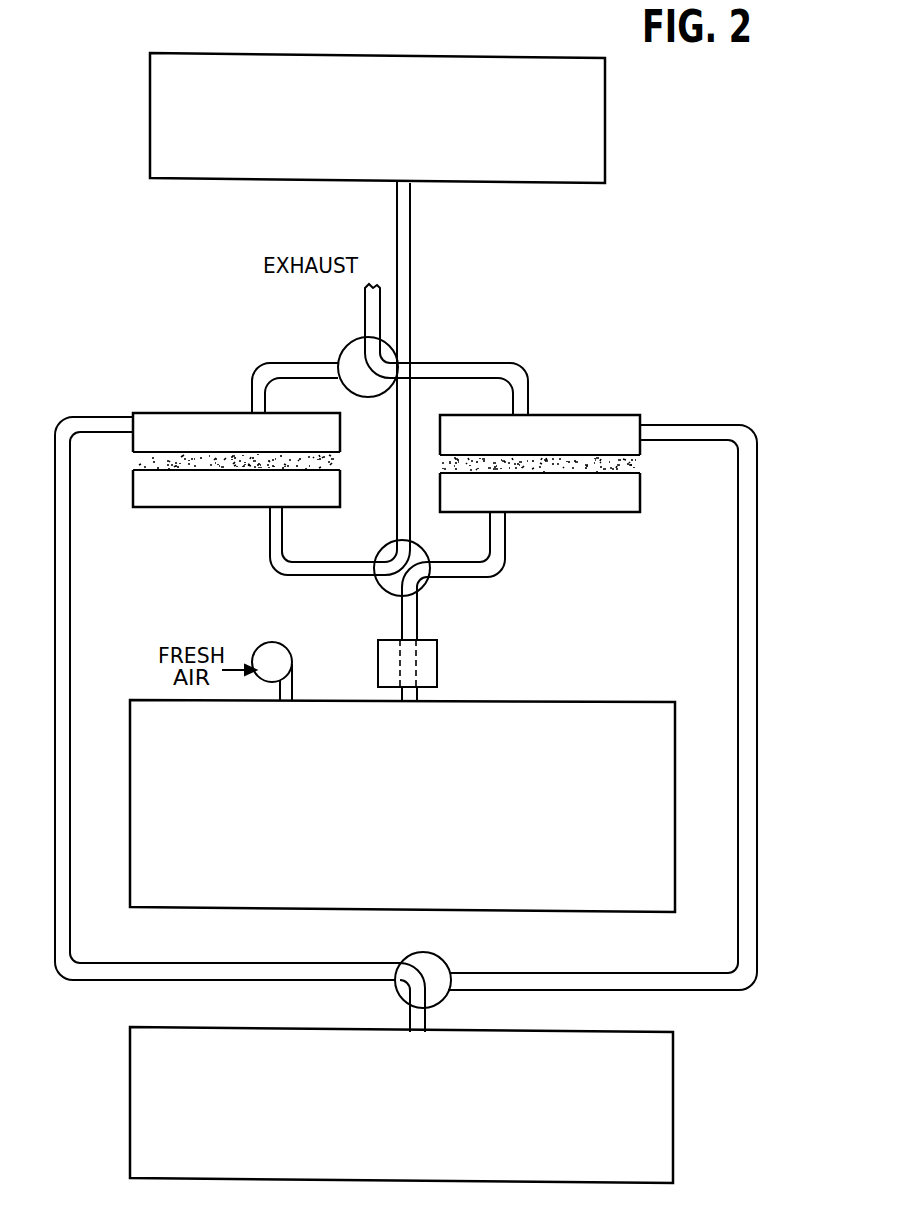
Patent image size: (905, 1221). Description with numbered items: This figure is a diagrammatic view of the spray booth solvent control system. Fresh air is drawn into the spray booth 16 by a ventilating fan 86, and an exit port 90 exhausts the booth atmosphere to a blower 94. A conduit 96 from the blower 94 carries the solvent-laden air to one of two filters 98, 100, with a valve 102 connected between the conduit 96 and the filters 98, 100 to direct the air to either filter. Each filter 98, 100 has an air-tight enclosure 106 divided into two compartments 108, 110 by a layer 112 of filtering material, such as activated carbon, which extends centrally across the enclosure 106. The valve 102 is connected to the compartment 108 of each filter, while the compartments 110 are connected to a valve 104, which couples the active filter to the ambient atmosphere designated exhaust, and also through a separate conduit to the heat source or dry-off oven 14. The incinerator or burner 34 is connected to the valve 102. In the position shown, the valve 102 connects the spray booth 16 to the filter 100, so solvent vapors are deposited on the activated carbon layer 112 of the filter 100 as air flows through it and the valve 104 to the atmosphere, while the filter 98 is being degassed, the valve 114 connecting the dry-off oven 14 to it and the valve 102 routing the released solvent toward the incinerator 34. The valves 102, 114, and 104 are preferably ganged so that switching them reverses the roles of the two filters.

The incinerator 34 is at (522, 166).
The spray booth 16 is at (524, 842).
The dry-off oven 14 is at (554, 1158).
The fresh air fan 86 is at (264, 642).
The exit port 90 is at (405, 707).
The blower 94 is at (438, 665).
The conduit 96 is at (418, 638).
The filter 98 is at (152, 412).
The filter 100 is at (641, 421).
The valve 102 is at (392, 595).
The valve 104 is at (400, 362).
The air-tight enclosure 106 is at (390, 464).
The compartment 108 is at (223, 490).
The compartment 110 is at (223, 430).
The layer 112 is at (312, 463).
The valve 114 is at (445, 956).